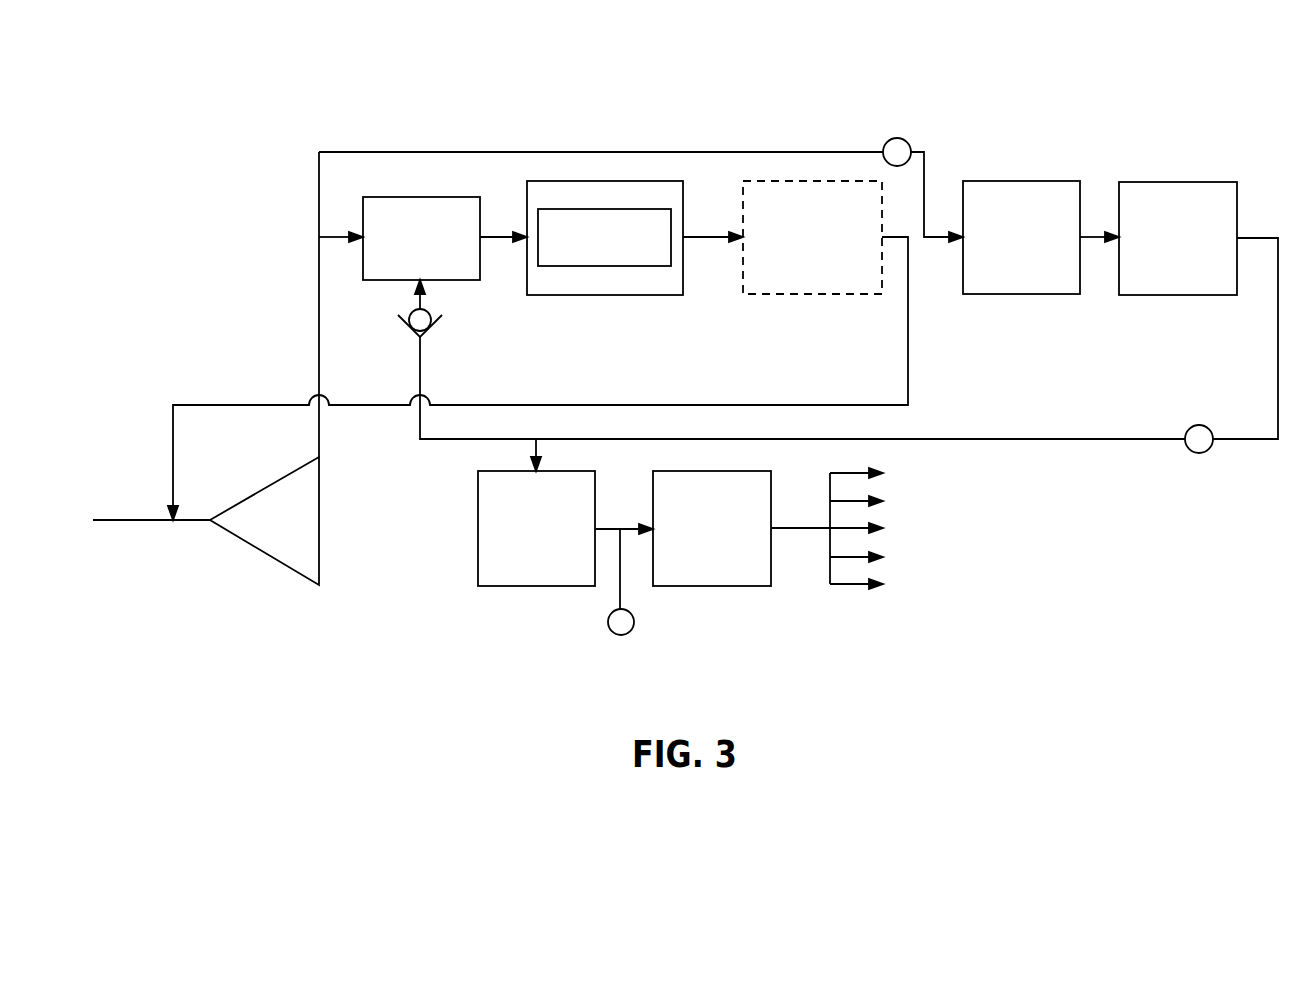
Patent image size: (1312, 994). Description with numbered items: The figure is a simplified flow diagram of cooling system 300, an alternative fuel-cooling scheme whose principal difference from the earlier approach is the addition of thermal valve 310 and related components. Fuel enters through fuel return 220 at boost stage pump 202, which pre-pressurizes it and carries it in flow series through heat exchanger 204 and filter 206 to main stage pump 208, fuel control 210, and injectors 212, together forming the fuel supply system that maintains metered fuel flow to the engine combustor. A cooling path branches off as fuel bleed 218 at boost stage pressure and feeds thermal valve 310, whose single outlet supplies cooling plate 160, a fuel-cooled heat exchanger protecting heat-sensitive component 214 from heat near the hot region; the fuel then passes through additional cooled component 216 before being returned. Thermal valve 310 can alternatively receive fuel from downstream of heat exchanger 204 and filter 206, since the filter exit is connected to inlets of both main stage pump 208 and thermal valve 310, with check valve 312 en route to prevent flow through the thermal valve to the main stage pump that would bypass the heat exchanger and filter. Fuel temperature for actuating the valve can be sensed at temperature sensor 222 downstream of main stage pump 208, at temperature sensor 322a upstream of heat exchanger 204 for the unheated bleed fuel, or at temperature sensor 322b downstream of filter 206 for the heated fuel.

The cooling system 300 is at (1040, 572).
The fuel bleed 218 is at (319, 237).
The thermal valve 310 is at (395, 280).
The cooling plate 160 is at (527, 223).
The heat-sensitive component 214 is at (562, 266).
The additional cooled component 216 is at (743, 223).
The temperature sensor 322a is at (895, 138).
The heat exchanger 204 is at (1028, 181).
The filter 206 is at (1185, 182).
The temperature sensor 322b is at (1200, 453).
The check valve 312 is at (407, 323).
The boost stage pump 202 is at (290, 472).
The fuel return 220 is at (170, 518).
The main stage pump 208 is at (477, 519).
The fuel control 210 is at (773, 502).
The injectors 212 is at (849, 528).
The temperature sensor 222 is at (608, 620).